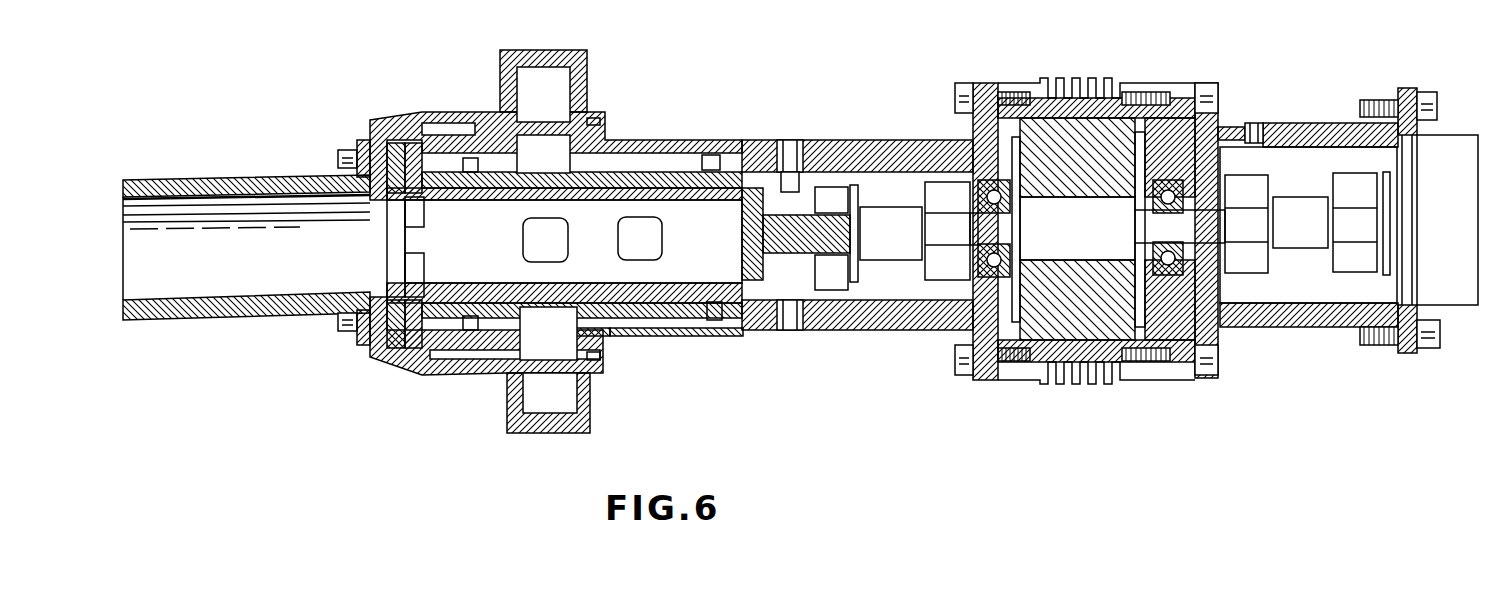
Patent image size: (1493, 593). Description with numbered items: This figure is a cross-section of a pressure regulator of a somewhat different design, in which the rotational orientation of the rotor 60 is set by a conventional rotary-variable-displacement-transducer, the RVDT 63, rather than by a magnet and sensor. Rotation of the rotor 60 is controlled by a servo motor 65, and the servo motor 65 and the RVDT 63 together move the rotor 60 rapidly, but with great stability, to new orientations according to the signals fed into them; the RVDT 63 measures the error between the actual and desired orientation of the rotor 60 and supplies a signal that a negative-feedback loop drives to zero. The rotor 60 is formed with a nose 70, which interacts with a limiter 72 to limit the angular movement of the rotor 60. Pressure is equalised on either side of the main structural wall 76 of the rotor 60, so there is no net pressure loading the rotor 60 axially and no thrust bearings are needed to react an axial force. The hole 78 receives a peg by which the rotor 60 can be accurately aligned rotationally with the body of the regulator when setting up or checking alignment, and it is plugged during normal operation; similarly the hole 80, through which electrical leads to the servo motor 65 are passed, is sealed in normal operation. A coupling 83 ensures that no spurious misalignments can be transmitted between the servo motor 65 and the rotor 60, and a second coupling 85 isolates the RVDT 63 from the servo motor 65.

The rotor 60 is at (585, 247).
The rotary-variable-displacement-transducer (RVDT) 63 is at (1462, 148).
The servo motor 65 is at (1074, 157).
The nose 70 is at (417, 258).
The limiter 72 is at (376, 205).
The main structural wall 76 is at (757, 272).
The hole 78 is at (793, 143).
The hole 80 is at (1248, 123).
The coupling 83 is at (890, 245).
The coupling 85 is at (1298, 230).